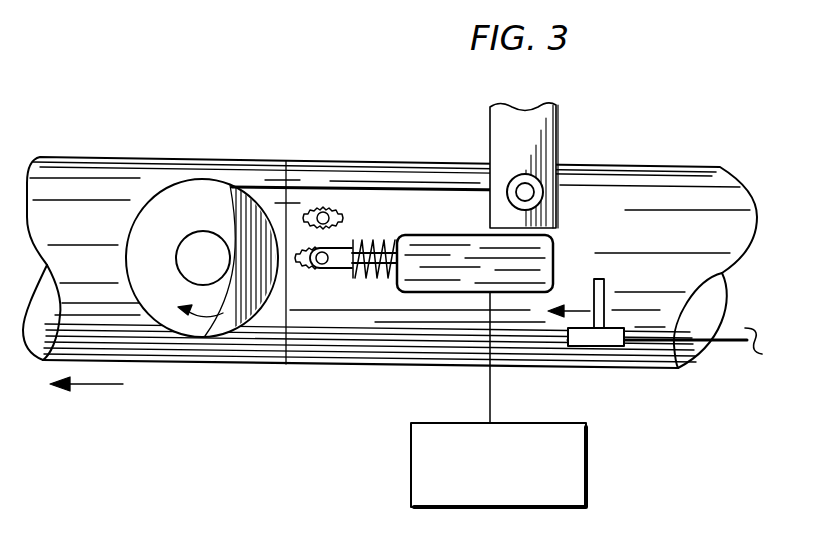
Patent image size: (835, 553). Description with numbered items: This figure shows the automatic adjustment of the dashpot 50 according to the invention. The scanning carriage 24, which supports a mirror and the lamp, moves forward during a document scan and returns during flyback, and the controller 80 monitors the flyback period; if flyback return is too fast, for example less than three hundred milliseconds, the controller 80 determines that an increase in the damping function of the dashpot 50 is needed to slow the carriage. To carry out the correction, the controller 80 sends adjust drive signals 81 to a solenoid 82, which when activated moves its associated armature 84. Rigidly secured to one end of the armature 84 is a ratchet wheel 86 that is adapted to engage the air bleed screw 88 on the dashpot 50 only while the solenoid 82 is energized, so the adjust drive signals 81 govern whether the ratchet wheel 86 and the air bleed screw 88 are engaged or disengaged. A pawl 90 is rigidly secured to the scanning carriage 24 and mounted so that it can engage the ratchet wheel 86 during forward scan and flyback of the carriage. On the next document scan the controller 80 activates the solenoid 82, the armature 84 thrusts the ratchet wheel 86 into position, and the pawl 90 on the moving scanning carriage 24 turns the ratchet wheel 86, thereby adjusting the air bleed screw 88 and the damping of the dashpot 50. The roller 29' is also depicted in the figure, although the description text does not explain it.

The scanning carriage 24 is at (546, 120).
The roller 29' is at (201, 226).
The dashpot 50 is at (336, 158).
The controller 80 is at (590, 442).
The adjust drive signals 81 is at (490, 397).
The solenoid 82 is at (558, 238).
The armature 84 is at (372, 237).
The ratchet wheel 86 is at (330, 280).
The air bleed screw 88 is at (340, 215).
The pawl 90 is at (604, 288).